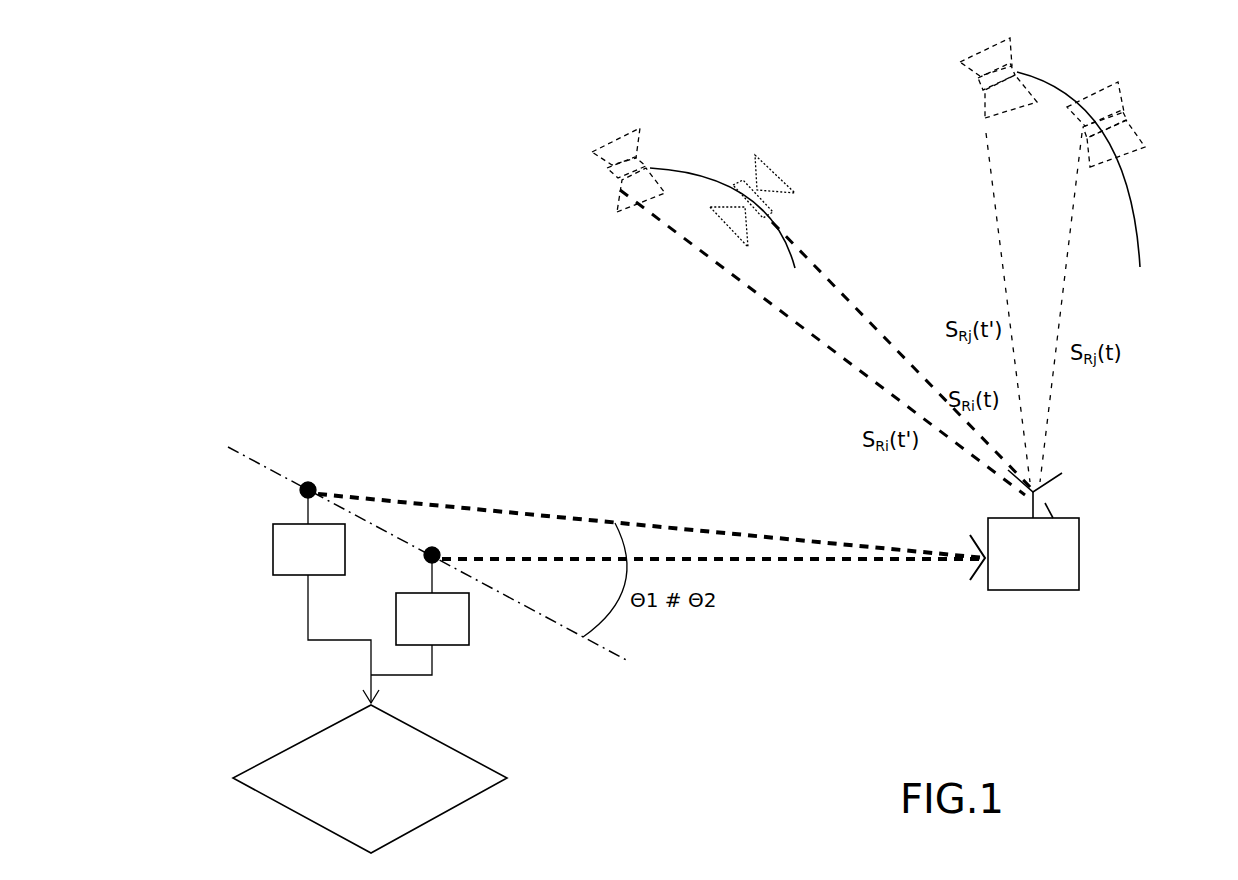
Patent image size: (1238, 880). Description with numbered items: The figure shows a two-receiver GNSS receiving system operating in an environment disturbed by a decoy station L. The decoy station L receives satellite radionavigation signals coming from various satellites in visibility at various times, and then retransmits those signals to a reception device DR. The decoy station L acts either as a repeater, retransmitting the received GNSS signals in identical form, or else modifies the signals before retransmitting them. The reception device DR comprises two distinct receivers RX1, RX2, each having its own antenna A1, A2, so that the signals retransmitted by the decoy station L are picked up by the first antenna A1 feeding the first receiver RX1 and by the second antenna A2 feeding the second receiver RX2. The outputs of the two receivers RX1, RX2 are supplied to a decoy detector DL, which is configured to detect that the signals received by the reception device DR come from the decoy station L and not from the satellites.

The decoy station L is at (1024, 530).
The reception device DR is at (193, 557).
The antenna A1 is at (310, 476).
The antenna A2 is at (438, 544).
The receiver RX1 is at (309, 549).
The receiver RX2 is at (432, 619).
The decoy detector DL is at (507, 778).